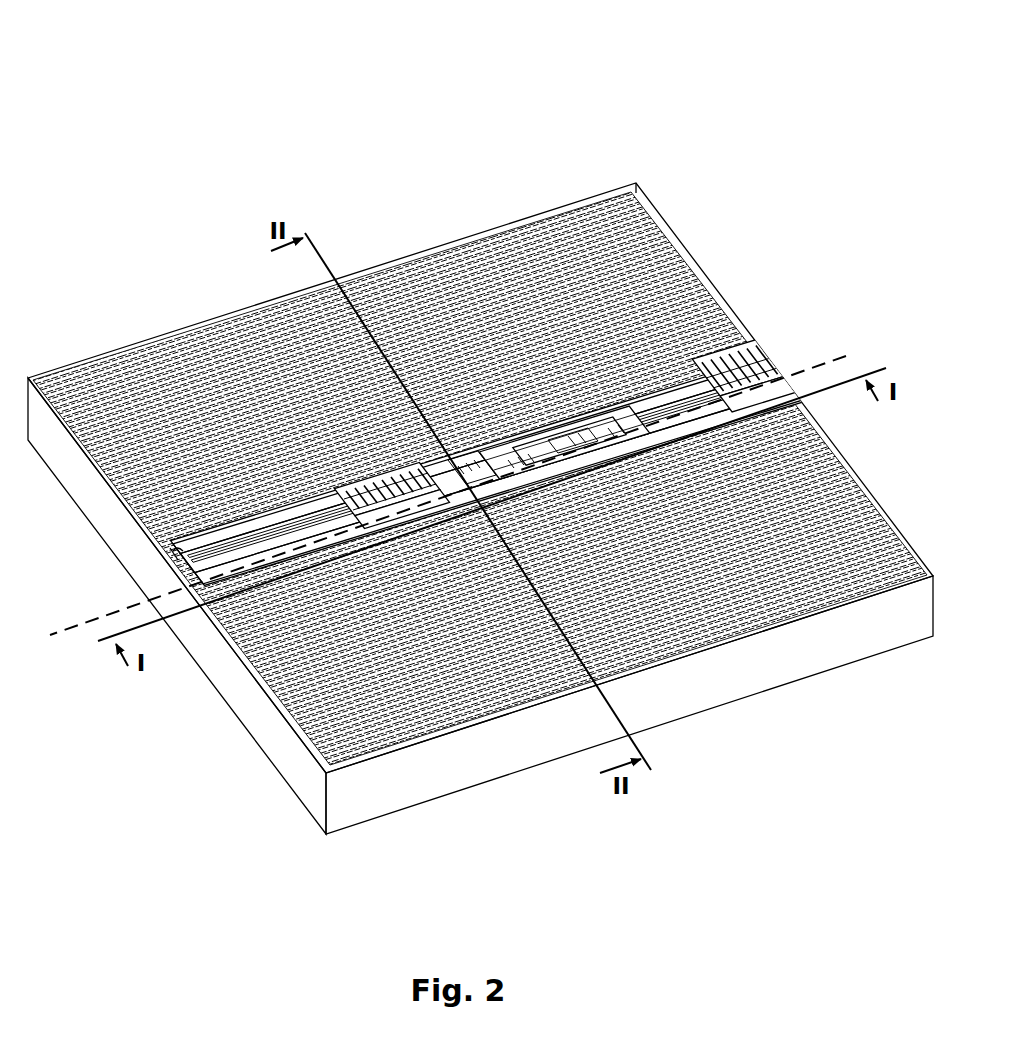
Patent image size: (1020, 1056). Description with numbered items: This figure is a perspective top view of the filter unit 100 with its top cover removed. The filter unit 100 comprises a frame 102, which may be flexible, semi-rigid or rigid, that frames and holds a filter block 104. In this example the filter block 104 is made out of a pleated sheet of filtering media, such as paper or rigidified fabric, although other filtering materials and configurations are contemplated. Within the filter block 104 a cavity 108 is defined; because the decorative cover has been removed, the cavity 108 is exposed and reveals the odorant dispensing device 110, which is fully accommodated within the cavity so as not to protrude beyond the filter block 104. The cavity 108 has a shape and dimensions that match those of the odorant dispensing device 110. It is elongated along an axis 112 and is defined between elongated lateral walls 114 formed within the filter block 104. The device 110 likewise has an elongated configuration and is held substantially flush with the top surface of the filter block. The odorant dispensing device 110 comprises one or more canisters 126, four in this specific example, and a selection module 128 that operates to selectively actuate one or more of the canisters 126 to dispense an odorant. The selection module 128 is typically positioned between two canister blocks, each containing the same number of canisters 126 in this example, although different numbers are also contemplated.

The filter unit 100 is at (197, 104).
The frame 102 is at (660, 207).
The filter block 104 is at (104, 367).
The cavity 108 is at (637, 388).
The odorant dispensing device 110 is at (707, 348).
The axis 112 is at (800, 362).
The elongated lateral walls 114 is at (296, 503).
The canisters 126 is at (710, 420).
The selection module 128 is at (536, 418).